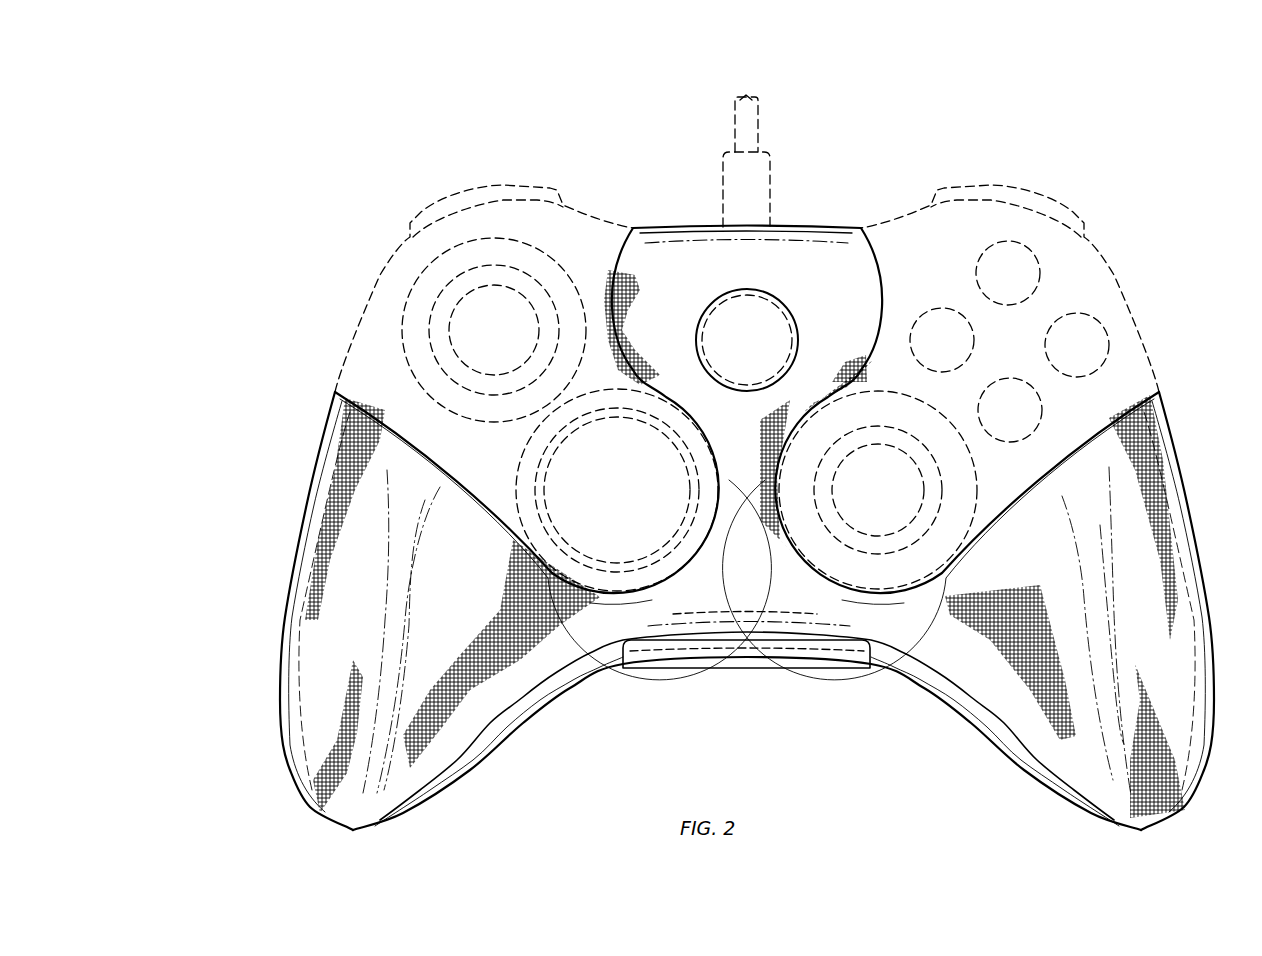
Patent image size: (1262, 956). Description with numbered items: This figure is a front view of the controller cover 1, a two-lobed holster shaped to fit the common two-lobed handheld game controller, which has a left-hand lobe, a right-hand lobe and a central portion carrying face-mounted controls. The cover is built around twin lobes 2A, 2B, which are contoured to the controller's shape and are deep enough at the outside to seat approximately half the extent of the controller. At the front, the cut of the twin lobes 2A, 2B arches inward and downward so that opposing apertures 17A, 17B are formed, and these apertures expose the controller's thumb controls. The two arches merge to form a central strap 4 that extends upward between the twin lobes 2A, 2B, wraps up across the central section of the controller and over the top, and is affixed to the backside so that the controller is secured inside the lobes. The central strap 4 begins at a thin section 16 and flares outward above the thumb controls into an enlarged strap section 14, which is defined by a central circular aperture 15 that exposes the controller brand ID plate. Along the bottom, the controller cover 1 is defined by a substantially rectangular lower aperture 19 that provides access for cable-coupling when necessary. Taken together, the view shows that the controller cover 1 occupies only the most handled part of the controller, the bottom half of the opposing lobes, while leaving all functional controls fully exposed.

The controller cover 1 is at (278, 437).
The lobe 2A is at (298, 535).
The lobe 2B is at (1191, 529).
The central strap 4 is at (652, 216).
The enlarged strap section 14 is at (690, 250).
The central circular aperture 15 is at (783, 317).
The thin section 16 is at (747, 485).
The aperture 17A is at (684, 572).
The aperture 17B is at (808, 568).
The lower aperture 19 is at (627, 645).